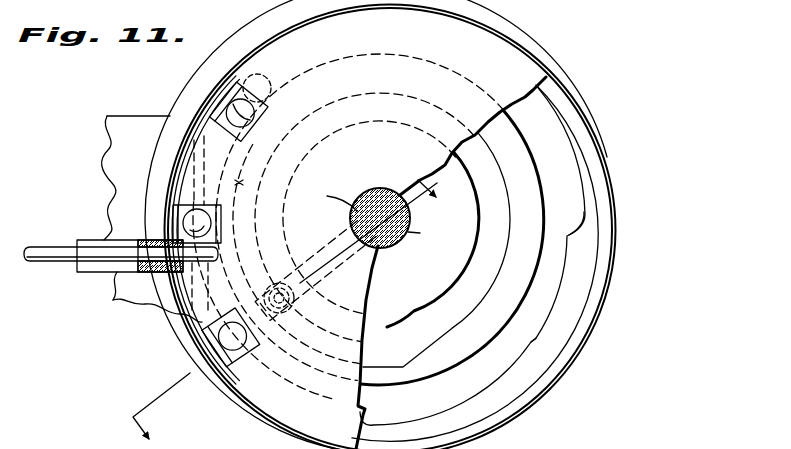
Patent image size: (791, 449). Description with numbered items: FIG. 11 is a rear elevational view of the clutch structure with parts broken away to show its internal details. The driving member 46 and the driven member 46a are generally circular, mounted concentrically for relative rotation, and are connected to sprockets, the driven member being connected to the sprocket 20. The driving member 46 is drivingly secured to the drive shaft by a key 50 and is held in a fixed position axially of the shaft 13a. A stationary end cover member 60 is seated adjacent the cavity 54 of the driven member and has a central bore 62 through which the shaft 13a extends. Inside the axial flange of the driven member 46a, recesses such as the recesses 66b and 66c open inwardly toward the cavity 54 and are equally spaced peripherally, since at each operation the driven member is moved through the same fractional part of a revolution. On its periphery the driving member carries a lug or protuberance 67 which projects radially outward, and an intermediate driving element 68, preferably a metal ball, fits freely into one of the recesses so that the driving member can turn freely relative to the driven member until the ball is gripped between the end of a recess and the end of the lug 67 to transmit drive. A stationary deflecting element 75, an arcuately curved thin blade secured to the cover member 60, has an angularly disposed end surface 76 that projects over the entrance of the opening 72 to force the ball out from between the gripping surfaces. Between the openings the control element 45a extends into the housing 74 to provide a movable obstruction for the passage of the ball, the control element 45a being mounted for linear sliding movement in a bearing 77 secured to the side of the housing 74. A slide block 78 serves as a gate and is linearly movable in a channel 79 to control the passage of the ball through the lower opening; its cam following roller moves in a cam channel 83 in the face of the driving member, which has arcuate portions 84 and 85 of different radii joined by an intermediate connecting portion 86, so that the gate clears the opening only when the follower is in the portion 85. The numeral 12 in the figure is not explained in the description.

The drive cable 12 is at (281, 309).
The shaft 13a is at (437, 235).
The sprocket 20 is at (110, 127).
The control element 45a is at (53, 264).
The driving member 46 is at (523, 163).
The driven member 46a is at (603, 236).
The key 50 is at (373, 197).
The cavity 54 is at (553, 301).
The stationary end cover member 60 is at (503, 63).
The central bore 62 is at (328, 193).
The recess 66b is at (488, 396).
The recess 66c is at (586, 197).
The lug or protuberance 67 is at (254, 170).
The intermediate driving element 68 is at (222, 222).
The opening 72 is at (262, 108).
The housing 74 is at (207, 93).
The stationary deflecting element 75 is at (238, 352).
The angularly disposed end surface 76 is at (261, 73).
The bearing 77 is at (93, 246).
The slide block 78 is at (291, 310).
The channel 79 is at (342, 237).
The cam channel 83 is at (458, 326).
The arcuate portion 84 is at (388, 327).
The arcuate portion 85 is at (472, 166).
The intermediate connecting portion 86 is at (348, 226).